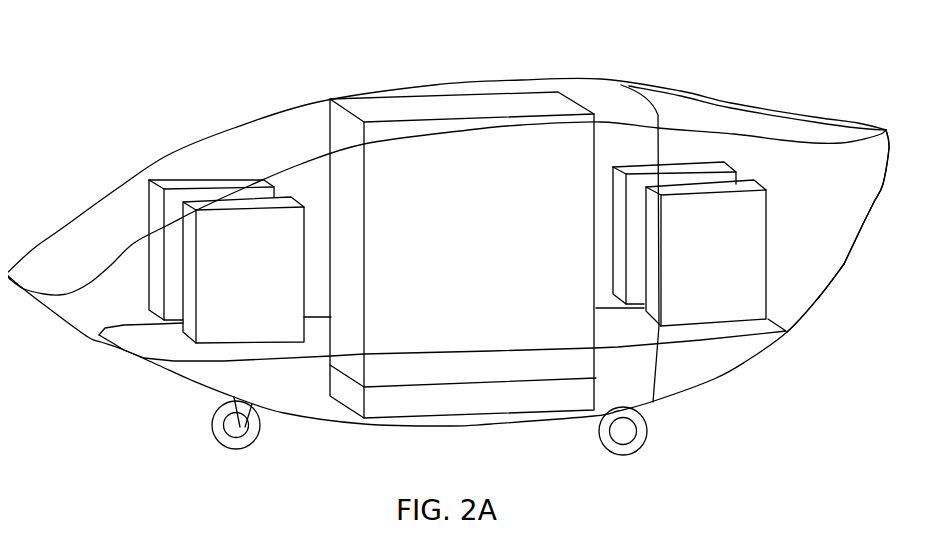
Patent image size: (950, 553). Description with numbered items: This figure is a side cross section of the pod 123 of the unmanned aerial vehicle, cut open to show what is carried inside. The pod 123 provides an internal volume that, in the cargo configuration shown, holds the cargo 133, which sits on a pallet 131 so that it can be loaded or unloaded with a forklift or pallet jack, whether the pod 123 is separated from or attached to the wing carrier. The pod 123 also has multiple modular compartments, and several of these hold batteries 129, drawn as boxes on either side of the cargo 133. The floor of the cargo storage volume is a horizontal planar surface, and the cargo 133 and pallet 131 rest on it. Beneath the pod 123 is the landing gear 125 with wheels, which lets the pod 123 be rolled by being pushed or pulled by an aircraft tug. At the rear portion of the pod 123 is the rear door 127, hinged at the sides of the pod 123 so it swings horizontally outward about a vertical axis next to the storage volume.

The pod 123 is at (231, 136).
The landing gear 125 is at (237, 433).
The rear door 127 is at (842, 267).
The batteries 129 is at (167, 197).
The pallet 131 is at (490, 397).
The cargo 133 is at (431, 107).